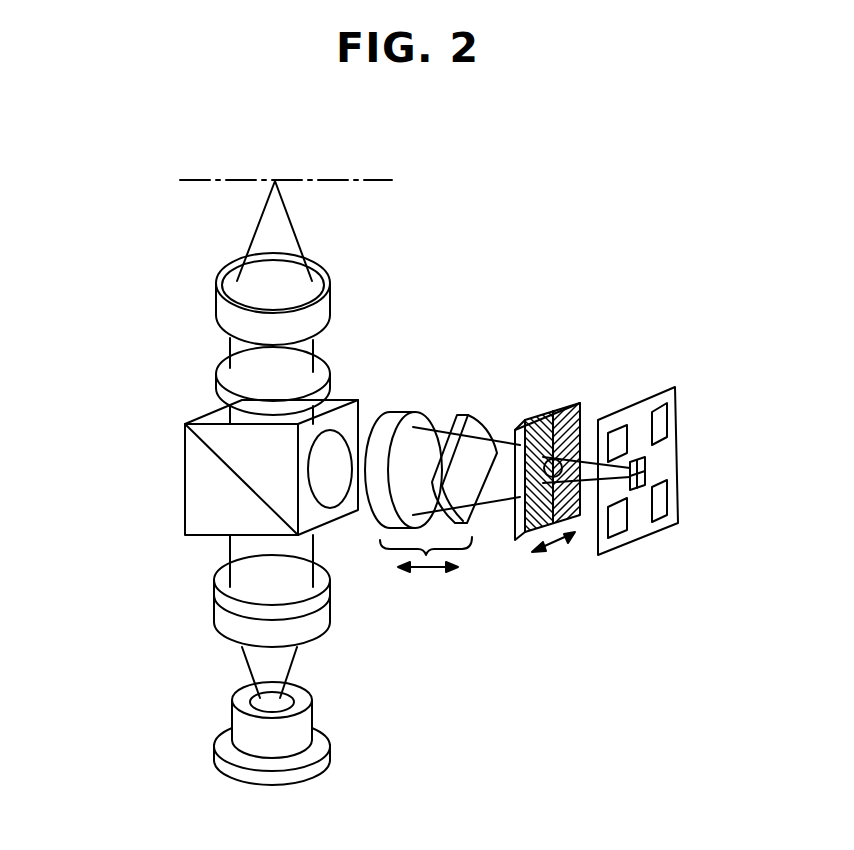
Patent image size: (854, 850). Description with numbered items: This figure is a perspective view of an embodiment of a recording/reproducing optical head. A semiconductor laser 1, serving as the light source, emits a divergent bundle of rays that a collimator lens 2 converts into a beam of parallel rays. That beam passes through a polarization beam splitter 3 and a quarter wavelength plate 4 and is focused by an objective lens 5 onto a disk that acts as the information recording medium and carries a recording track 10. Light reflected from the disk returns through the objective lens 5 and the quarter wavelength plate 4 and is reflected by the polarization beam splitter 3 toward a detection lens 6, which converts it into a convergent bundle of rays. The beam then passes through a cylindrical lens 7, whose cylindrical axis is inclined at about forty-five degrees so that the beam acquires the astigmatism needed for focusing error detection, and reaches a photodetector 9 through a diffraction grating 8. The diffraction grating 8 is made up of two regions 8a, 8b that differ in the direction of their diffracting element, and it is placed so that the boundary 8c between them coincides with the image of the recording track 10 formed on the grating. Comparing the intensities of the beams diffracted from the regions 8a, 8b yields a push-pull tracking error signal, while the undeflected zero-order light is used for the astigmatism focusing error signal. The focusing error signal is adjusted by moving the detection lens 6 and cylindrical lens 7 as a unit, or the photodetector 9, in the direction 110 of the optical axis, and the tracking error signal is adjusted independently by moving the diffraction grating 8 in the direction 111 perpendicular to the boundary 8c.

The semiconductor laser 1 is at (214, 735).
The collimator lens 2 is at (214, 600).
The polarization beam splitter 3 is at (185, 490).
The quarter wavelength plate 4 is at (216, 370).
The objective lens 5 is at (216, 303).
The detection lens 6 is at (400, 412).
The cylindrical lens 7 is at (462, 413).
The diffraction grating 8 is at (547, 414).
The first grating region 8a is at (526, 424).
The second grating region 8b is at (578, 405).
The boundary 8c is at (554, 412).
The photodetector 9 is at (660, 388).
The recording track 10 is at (352, 178).
The direction of the optical axis 110 is at (425, 569).
The direction perpendicular to the boundary 111 is at (553, 543).